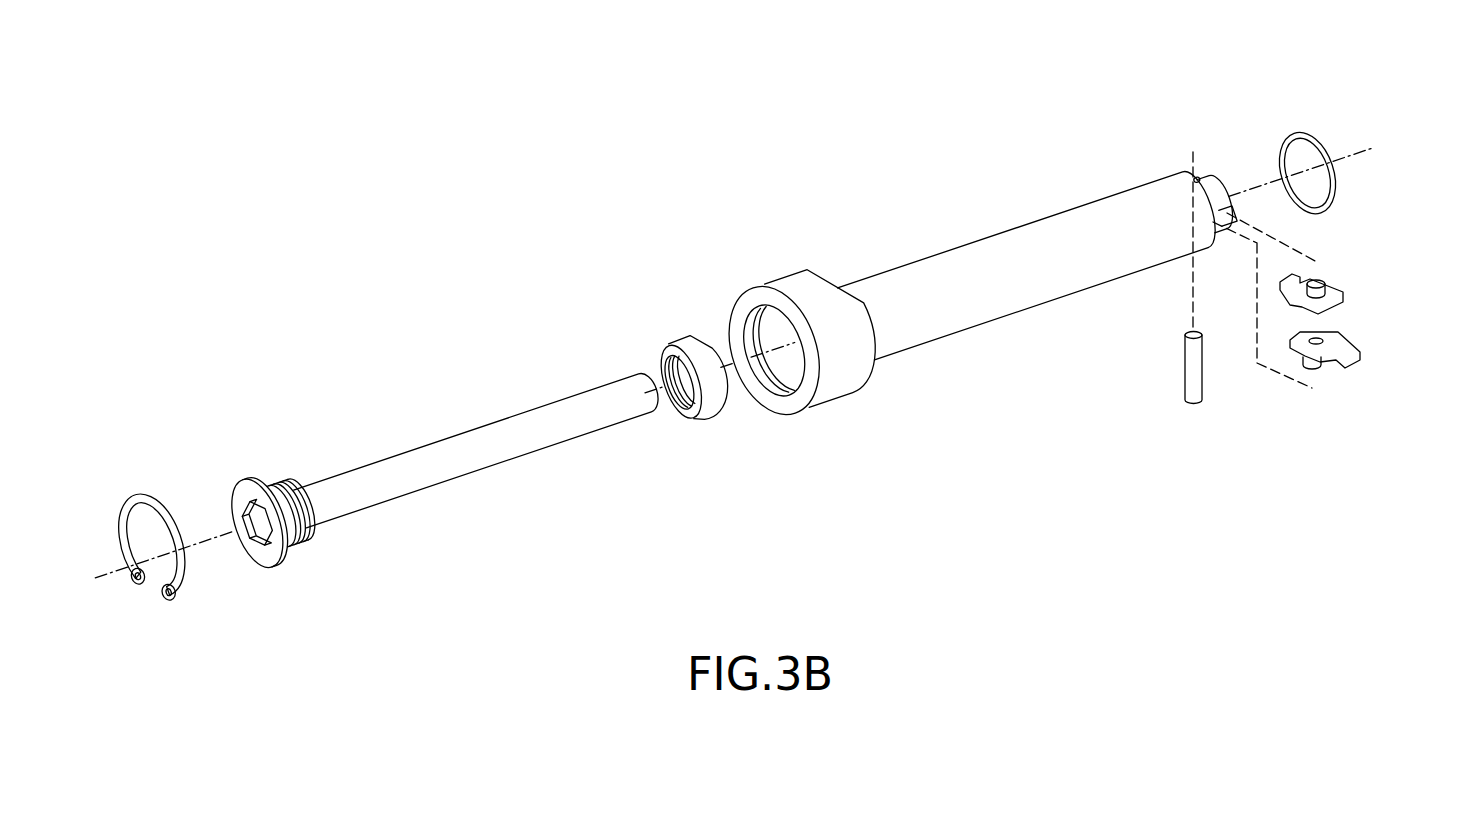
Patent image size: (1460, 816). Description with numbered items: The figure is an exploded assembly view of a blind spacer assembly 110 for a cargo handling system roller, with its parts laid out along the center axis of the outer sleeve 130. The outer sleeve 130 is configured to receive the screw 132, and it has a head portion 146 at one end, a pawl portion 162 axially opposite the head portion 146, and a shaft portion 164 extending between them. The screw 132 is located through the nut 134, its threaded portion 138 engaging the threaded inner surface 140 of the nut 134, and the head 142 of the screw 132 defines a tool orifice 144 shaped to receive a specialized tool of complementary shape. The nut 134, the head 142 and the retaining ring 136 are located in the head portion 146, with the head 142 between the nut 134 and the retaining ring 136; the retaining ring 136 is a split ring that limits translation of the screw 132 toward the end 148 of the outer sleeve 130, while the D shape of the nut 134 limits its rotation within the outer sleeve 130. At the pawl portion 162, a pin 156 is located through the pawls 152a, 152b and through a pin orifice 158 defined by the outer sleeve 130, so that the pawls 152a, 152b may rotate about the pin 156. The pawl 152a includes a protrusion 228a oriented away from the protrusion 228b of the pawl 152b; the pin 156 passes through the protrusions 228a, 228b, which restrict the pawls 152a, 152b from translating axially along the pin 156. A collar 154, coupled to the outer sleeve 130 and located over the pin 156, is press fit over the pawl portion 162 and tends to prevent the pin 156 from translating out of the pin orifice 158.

The blind spacer assembly 110 is at (358, 170).
The outer sleeve 130 is at (1018, 313).
The screw 132 is at (487, 427).
The nut 134 is at (711, 412).
The retaining ring 136 is at (130, 515).
The threaded portion 138 is at (315, 548).
The threaded inner surface 140 is at (658, 360).
The head 142 is at (240, 494).
The tool orifice 144 is at (247, 546).
The head portion 146 is at (875, 400).
The end 148 is at (757, 300).
The pawl 152a is at (1337, 300).
The pawl 152b is at (1343, 347).
The collar 154 is at (1307, 133).
The pin 156 is at (1190, 398).
The pin orifice 158 is at (1201, 165).
The pawl portion 162 is at (1237, 235).
The shaft portion 164 is at (1158, 138).
The protrusion 228a is at (1325, 290).
The protrusion 228b is at (1307, 366).